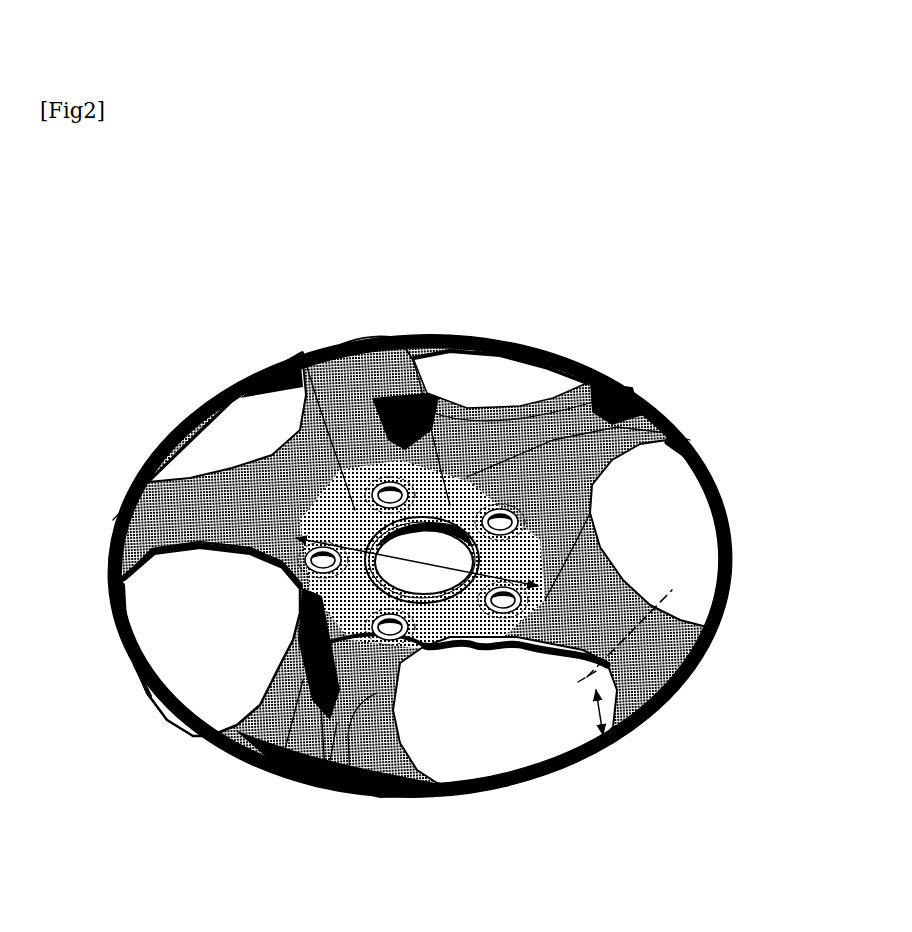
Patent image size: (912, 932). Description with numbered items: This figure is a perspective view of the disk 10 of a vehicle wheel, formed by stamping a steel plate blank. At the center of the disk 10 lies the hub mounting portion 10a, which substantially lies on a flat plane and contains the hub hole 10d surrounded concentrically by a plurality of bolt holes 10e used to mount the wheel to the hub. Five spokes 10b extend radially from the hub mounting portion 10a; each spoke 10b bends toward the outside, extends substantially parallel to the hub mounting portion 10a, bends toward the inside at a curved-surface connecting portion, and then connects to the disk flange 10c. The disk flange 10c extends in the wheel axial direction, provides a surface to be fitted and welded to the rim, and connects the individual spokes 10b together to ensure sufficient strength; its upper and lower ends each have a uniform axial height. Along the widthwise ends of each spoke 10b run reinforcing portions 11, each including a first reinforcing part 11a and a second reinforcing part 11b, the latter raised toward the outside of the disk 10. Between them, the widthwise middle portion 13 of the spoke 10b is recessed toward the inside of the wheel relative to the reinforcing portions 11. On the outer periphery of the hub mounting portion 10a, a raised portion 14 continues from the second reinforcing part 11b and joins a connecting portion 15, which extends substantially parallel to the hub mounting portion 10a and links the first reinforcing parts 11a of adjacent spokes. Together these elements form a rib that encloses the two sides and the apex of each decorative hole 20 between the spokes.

The disk 10 is at (692, 236).
The hub mounting portion 10a is at (467, 500).
The spoke 10b is at (412, 708).
The disk flange 10c is at (187, 730).
The hub hole 10d is at (417, 542).
The bolt holes 10e is at (388, 488).
The reinforcing portion 11 is at (622, 293).
The first reinforcing part 11a is at (543, 403).
The second reinforcing part 11b is at (630, 412).
The widthwise middle portion 13 is at (327, 770).
The raised portion 14 is at (356, 342).
The connecting portion 15 is at (458, 405).
The decorative hole 20 is at (246, 647).